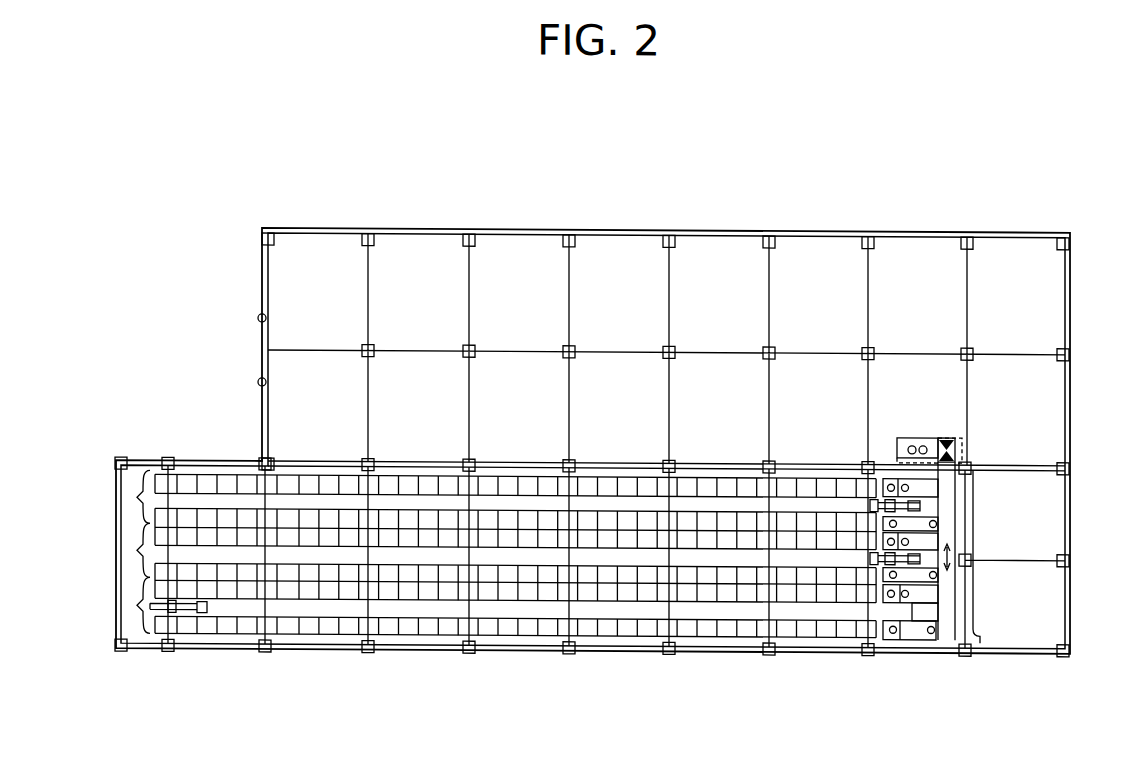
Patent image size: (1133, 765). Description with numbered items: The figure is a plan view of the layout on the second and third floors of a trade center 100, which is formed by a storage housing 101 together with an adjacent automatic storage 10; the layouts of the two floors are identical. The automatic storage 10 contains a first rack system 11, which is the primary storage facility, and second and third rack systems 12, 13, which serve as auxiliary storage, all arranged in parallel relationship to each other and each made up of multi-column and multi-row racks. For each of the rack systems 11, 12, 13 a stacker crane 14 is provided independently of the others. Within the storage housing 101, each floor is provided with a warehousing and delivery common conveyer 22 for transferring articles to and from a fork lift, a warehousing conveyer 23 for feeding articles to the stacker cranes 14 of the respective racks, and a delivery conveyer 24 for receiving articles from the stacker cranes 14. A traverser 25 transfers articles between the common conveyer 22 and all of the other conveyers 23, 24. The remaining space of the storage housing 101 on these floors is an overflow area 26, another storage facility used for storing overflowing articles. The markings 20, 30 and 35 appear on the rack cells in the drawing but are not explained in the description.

The trade center 100 is at (1036, 216).
The storage housing 101 is at (817, 270).
The overflow area 26 is at (930, 310).
The automatic storage 10 is at (783, 641).
The No. 1 rack system 11 is at (119, 503).
The No. 2 rack system 12 is at (119, 556).
The No. 3 rack system 13 is at (119, 606).
The stacker crane 14 is at (207, 609).
The warehousing and delivery common conveyer 22 is at (928, 434).
The warehousing conveyer 23 is at (938, 515).
The delivery conveyer 24 is at (882, 483).
The traverser 25 is at (958, 446).
The rack number 20 is at (488, 627).
The rack number 30 is at (287, 556).
The rack number 35 is at (164, 555).